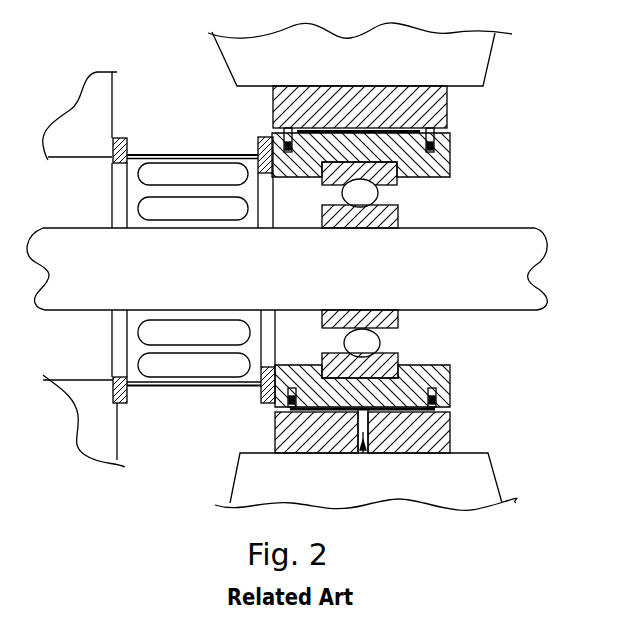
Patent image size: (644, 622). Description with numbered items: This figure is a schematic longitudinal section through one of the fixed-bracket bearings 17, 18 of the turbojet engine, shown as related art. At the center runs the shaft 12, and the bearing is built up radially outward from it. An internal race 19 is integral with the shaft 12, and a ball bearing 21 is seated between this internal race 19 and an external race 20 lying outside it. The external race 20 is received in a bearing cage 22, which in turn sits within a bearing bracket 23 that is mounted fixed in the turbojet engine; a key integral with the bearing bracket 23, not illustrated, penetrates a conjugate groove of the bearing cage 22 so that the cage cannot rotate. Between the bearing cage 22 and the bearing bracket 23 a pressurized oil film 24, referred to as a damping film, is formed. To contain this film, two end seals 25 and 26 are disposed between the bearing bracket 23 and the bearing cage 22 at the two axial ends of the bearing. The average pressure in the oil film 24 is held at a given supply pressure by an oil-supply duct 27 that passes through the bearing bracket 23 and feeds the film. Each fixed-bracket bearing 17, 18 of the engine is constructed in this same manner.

The shaft 12 is at (528, 245).
The fixed-bracket bearing 17 is at (363, 261).
The fixed-bracket bearing 18 is at (513, 161).
The internal race 19 is at (400, 211).
The external race 20 is at (395, 178).
The ball bearing 21 is at (348, 193).
The bearing cage 22 is at (442, 372).
The bearing bracket 23 is at (280, 432).
The oil film 24 is at (398, 413).
The end seal 25 is at (448, 400).
The end seal 26 is at (275, 404).
The oil-supply duct 27 is at (363, 454).